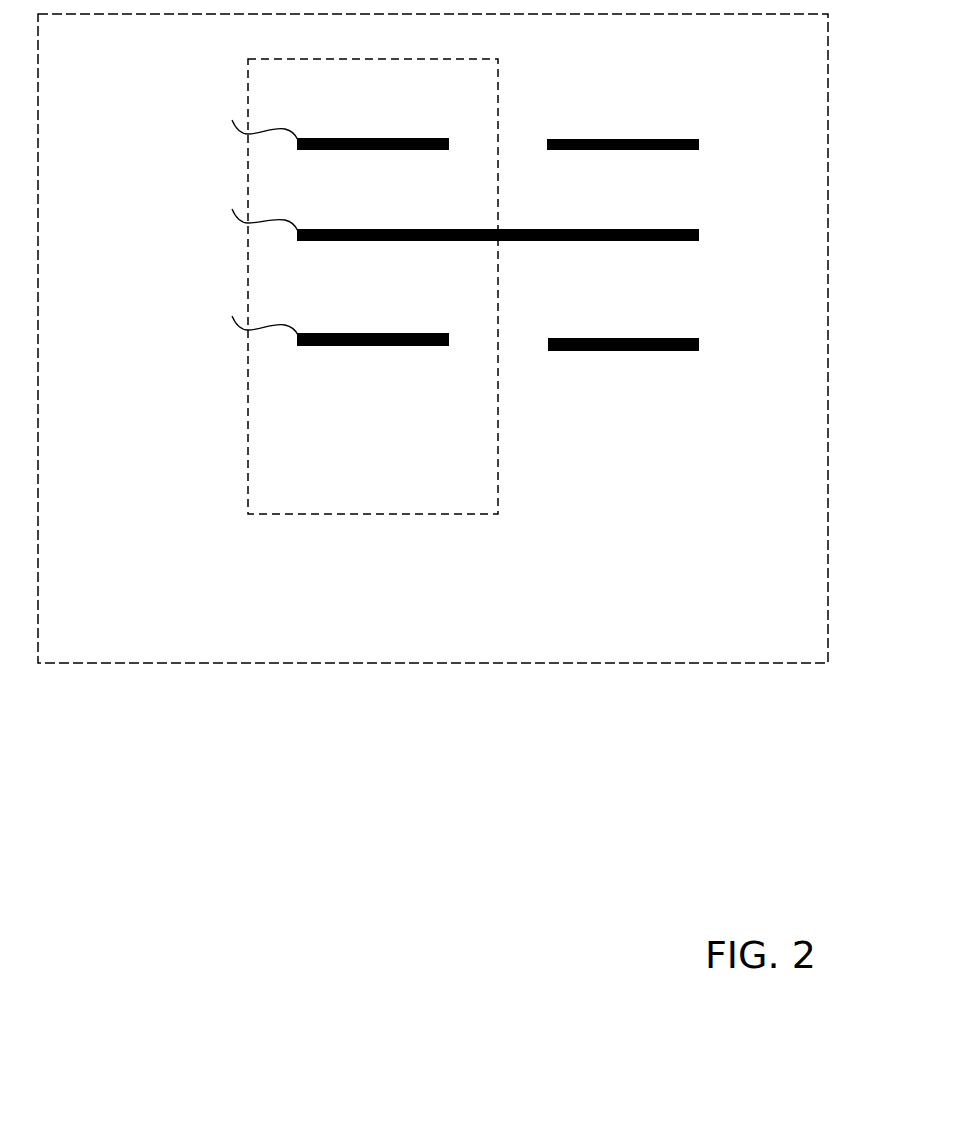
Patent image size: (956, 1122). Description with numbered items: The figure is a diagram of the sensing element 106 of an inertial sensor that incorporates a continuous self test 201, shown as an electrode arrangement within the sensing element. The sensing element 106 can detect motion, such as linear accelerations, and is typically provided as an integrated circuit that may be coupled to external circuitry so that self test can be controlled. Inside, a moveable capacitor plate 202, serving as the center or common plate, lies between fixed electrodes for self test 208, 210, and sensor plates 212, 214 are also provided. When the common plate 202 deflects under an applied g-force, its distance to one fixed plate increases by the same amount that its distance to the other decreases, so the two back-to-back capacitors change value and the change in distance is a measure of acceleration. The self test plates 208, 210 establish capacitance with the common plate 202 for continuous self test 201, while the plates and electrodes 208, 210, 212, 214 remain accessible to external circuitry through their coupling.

The sensing element 106 is at (433, 338).
The continuous self test 201 is at (373, 286).
The moveable capacitor plate 202 is at (469, 208).
The fixed electrode for self test 208 is at (292, 111).
The fixed electrode for self test 210 is at (294, 334).
The sensor plate 212 is at (623, 111).
The sensor plate 214 is at (623, 370).